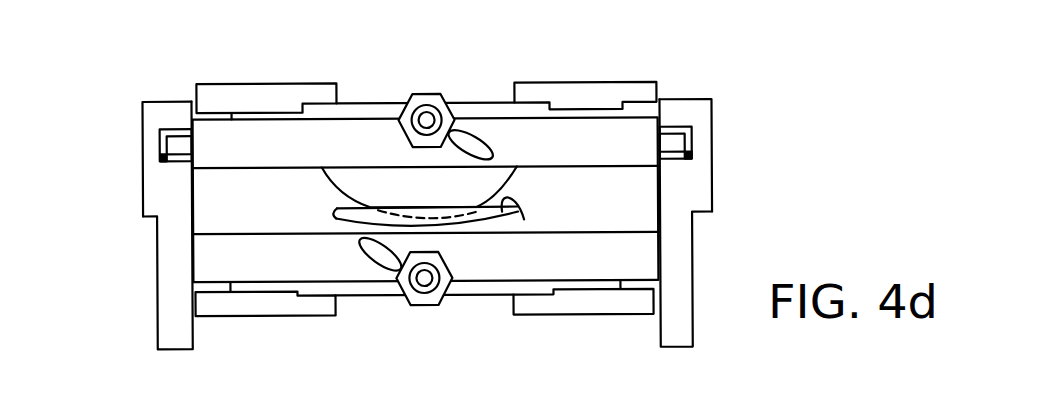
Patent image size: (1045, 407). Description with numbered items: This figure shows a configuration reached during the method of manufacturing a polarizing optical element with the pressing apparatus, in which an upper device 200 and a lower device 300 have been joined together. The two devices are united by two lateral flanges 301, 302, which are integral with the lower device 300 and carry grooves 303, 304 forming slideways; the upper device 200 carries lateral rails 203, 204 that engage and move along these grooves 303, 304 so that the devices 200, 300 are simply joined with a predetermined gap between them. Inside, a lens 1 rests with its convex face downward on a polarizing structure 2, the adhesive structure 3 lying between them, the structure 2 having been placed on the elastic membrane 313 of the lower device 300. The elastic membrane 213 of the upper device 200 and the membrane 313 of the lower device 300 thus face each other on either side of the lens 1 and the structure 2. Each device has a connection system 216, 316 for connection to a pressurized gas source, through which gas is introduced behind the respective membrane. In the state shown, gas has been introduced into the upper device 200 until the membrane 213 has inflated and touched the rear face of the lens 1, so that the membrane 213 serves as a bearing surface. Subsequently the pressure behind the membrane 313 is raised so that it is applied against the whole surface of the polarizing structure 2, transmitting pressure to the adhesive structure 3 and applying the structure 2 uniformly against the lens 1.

The lens 1 is at (330, 203).
The polarizing structure 2 is at (336, 216).
The adhesive structure 3 is at (524, 220).
The device 200 is at (380, 82).
The lateral rail 203 is at (177, 142).
The lateral rail 204 is at (672, 137).
The elastic membrane 213 is at (500, 190).
The system for connection to a pressurized gas source 216 is at (425, 93).
The device 300 is at (366, 321).
The lateral flange 301 is at (143, 188).
The lateral flange 302 is at (712, 173).
The groove 303 is at (143, 127).
The groove 304 is at (712, 137).
The elastic membrane 313 is at (498, 237).
The system for connection to a pressurized gas source 316 is at (427, 307).